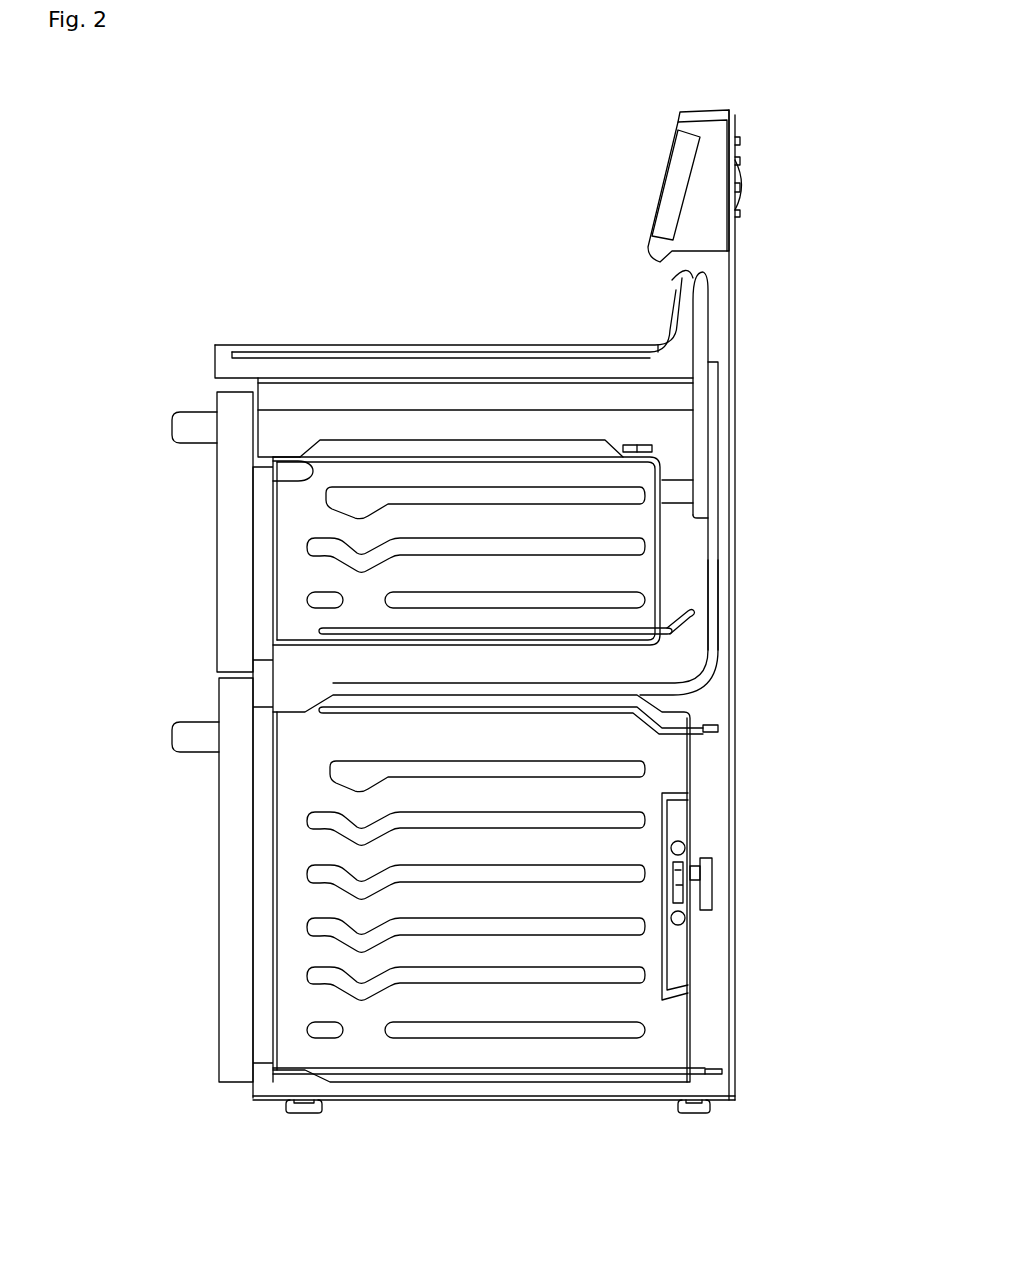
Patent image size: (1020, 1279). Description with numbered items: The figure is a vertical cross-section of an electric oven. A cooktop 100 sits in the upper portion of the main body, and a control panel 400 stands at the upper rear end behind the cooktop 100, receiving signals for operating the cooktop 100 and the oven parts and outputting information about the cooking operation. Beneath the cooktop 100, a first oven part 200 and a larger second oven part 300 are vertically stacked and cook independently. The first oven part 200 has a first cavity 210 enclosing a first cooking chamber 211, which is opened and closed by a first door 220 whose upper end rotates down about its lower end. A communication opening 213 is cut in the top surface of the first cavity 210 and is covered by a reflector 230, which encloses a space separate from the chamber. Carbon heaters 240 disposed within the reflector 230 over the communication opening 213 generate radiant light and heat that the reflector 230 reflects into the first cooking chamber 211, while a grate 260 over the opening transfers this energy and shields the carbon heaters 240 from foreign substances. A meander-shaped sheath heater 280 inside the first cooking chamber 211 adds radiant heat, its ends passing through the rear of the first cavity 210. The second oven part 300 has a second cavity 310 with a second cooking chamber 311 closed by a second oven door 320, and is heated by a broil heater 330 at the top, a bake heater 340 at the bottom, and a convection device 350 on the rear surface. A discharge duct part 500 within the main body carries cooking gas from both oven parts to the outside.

The cooktop 100 is at (268, 341).
The first oven part 200 is at (438, 480).
The first cavity 210 is at (661, 468).
The first cooking chamber 211 is at (619, 558).
The communication opening 213 is at (300, 462).
The first door 220 is at (215, 606).
The reflector 230 is at (537, 440).
The carbon heaters 240 is at (642, 447).
The grate 260 is at (565, 466).
The sheath heater 280 is at (676, 634).
The second oven part 300 is at (456, 915).
The second cavity 310 is at (690, 760).
The second cooking chamber 311 is at (497, 940).
The second oven door 320 is at (220, 965).
The broil heater 330 is at (720, 730).
The bake heater 340 is at (668, 1068).
The convection device 350 is at (700, 838).
The control panel 400 is at (690, 114).
The discharge duct part 500 is at (714, 666).